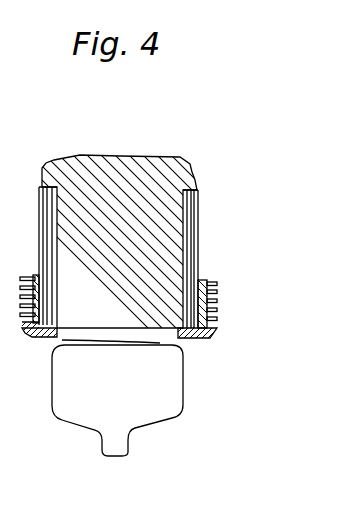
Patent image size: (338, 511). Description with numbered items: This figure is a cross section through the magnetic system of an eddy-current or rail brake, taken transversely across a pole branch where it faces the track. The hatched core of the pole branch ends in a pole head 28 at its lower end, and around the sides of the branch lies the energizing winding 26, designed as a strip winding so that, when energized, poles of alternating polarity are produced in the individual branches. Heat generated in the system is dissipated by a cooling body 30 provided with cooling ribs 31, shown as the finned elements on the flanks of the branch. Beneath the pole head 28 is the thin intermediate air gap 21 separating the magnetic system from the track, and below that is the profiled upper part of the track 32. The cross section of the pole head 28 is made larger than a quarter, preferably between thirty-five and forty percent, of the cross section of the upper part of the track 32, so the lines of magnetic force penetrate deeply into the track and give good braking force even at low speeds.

The air gap 21 is at (160, 343).
The energizing winding 26 is at (40, 227).
The pole head 28 is at (72, 321).
The cooling body 30 is at (202, 282).
The cooling rib 31 is at (210, 301).
The upper part of the track 32 is at (140, 398).